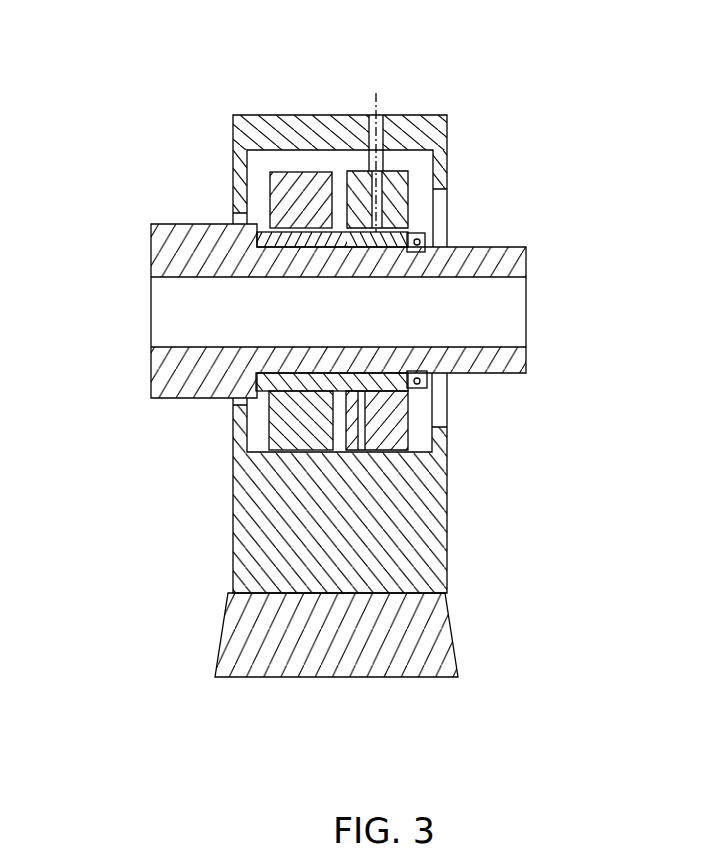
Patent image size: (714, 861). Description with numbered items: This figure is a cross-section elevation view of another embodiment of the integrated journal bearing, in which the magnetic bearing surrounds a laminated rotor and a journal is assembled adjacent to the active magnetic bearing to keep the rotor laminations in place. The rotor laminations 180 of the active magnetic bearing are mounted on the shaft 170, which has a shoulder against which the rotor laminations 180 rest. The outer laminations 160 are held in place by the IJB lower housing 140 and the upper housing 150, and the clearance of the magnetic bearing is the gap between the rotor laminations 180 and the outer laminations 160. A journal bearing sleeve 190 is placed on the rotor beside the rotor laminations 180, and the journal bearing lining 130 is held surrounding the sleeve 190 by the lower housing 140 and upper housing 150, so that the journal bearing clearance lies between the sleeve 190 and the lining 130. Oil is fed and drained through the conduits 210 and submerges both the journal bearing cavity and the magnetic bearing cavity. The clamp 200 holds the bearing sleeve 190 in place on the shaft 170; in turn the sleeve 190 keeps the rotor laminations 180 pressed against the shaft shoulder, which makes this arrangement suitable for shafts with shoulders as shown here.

The journal bearing lining 130 is at (395, 207).
The IJB lower housing 140 is at (401, 538).
The IJB upper housing 150 is at (310, 132).
The outer laminations 160 is at (295, 198).
The hollow shaft 170 is at (196, 369).
The rotor laminations 180 is at (282, 240).
The journal bearing sleeve 190 is at (387, 241).
The clamp 200 is at (427, 385).
The conduits 210 is at (376, 157).